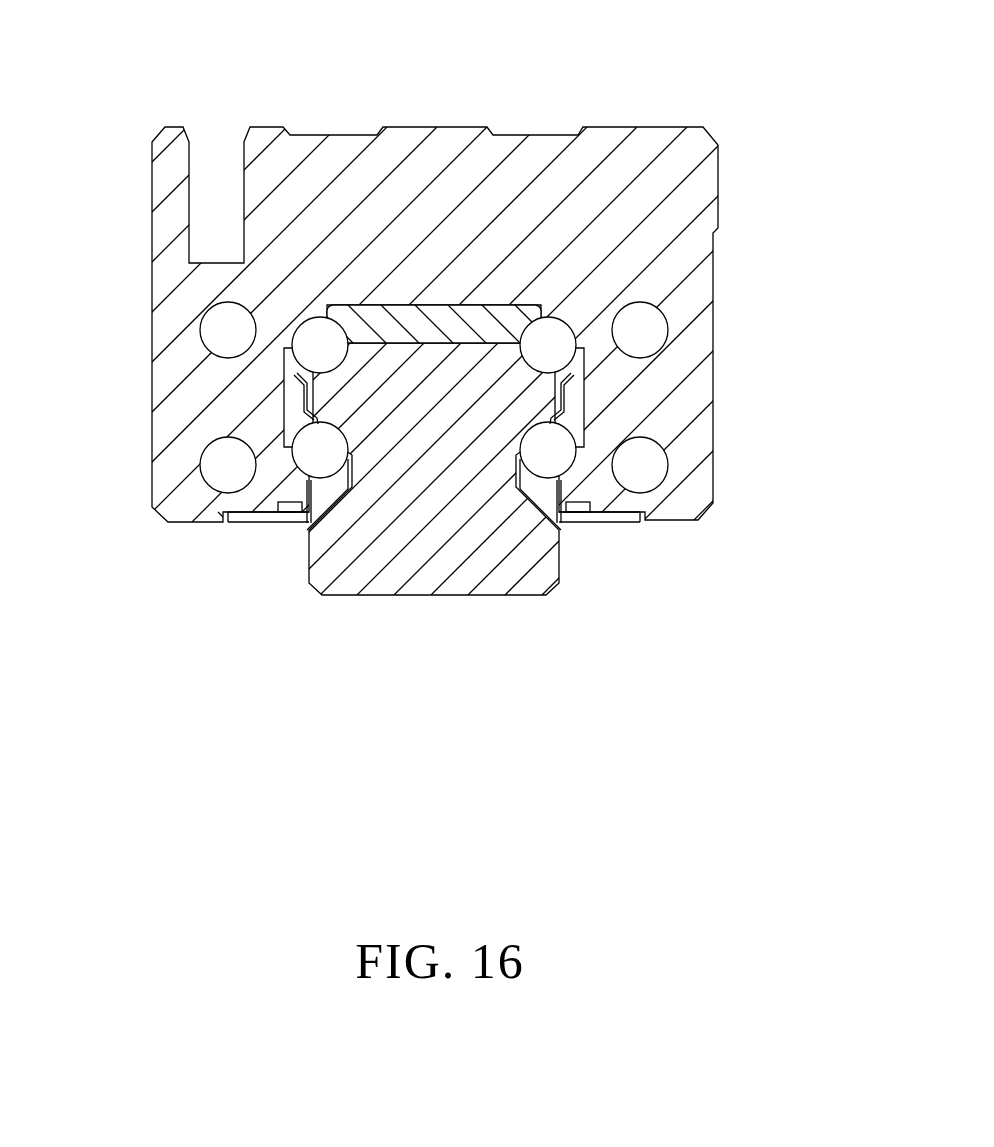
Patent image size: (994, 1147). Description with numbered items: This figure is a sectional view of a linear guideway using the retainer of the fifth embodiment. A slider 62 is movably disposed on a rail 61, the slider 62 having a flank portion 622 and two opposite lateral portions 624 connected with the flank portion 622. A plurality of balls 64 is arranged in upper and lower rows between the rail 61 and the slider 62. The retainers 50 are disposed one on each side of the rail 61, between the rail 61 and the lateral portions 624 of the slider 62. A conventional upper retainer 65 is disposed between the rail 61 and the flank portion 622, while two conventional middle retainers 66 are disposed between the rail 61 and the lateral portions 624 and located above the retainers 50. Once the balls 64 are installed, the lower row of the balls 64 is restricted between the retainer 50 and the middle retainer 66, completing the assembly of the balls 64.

The slider 62 is at (497, 266).
The flank portion 622 is at (425, 155).
The lateral portions 624 is at (205, 383).
The balls 64 is at (316, 333).
The upper retainer 65 is at (452, 320).
The middle retainers 66 is at (296, 398).
The rail 61 is at (485, 573).
The retainer 50 is at (278, 531).